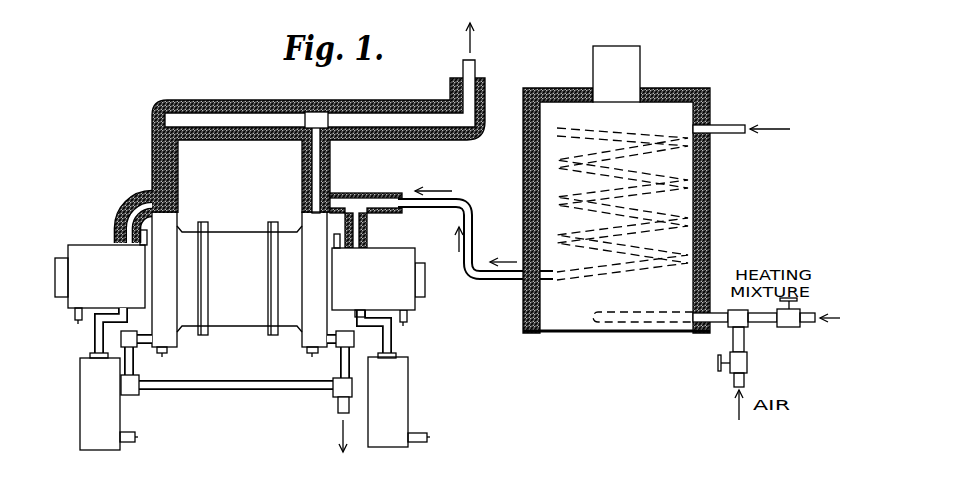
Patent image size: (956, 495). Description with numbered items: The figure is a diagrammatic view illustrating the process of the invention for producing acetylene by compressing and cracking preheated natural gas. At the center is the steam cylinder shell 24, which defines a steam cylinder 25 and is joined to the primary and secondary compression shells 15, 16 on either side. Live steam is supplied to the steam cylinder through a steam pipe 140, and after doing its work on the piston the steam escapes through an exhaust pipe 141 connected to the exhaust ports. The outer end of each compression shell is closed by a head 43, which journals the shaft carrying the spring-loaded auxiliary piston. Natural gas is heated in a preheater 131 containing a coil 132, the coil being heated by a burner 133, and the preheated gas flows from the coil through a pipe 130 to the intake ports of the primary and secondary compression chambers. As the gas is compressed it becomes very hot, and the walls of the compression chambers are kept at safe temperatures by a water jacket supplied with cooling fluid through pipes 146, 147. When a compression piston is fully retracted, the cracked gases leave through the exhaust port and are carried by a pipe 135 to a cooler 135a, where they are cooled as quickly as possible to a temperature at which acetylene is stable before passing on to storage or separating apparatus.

The steam pipe 140 is at (252, 120).
The steam cylinder shell 24 is at (233, 240).
The steam cylinder 25 is at (247, 339).
The secondary compression shell 16 is at (107, 244).
The head 43 is at (68, 268).
The pipe 147 is at (78, 318).
The pipe 135 is at (100, 332).
The cooler 135a is at (100, 430).
The exhaust pipe 141 is at (182, 388).
The pipe 130 is at (466, 200).
The pipe 146 is at (362, 237).
The primary compression shell 15 is at (400, 300).
The coil 132 is at (693, 179).
The preheater 131 is at (680, 238).
The burner 133 is at (613, 310).